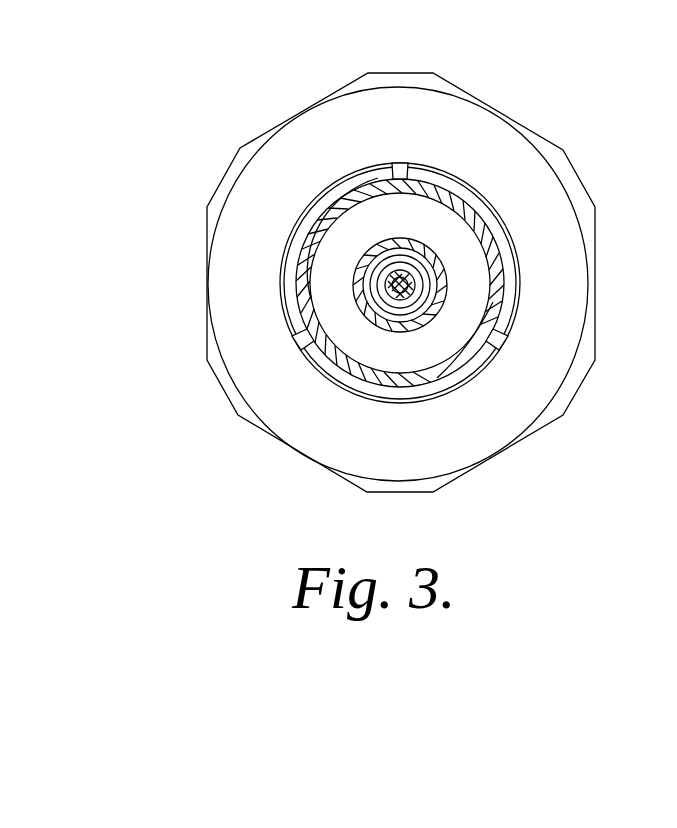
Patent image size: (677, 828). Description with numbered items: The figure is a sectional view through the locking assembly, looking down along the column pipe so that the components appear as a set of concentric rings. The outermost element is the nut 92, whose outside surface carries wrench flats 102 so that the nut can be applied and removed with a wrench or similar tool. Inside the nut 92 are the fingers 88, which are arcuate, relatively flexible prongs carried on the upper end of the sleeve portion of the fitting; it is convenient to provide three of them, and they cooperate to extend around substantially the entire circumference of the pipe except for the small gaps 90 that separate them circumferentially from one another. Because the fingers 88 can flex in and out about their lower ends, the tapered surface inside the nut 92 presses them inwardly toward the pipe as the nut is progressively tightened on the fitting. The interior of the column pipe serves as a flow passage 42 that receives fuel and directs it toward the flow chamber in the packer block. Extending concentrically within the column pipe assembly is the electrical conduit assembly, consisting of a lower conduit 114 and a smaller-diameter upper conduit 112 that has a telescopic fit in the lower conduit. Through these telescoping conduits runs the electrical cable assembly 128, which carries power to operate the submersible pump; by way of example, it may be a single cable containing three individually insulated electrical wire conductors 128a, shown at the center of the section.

The wrench flats 102 is at (313, 108).
The nut 92 is at (502, 127).
The gaps 90 is at (399, 163).
The fingers 88 is at (318, 207).
The flow passage 42 is at (327, 262).
The lower conduit 114 is at (370, 250).
The upper conduit 112 is at (410, 266).
The electrical cable assembly 128 is at (398, 282).
The individually insulated electrical wire conductors 128a is at (405, 272).